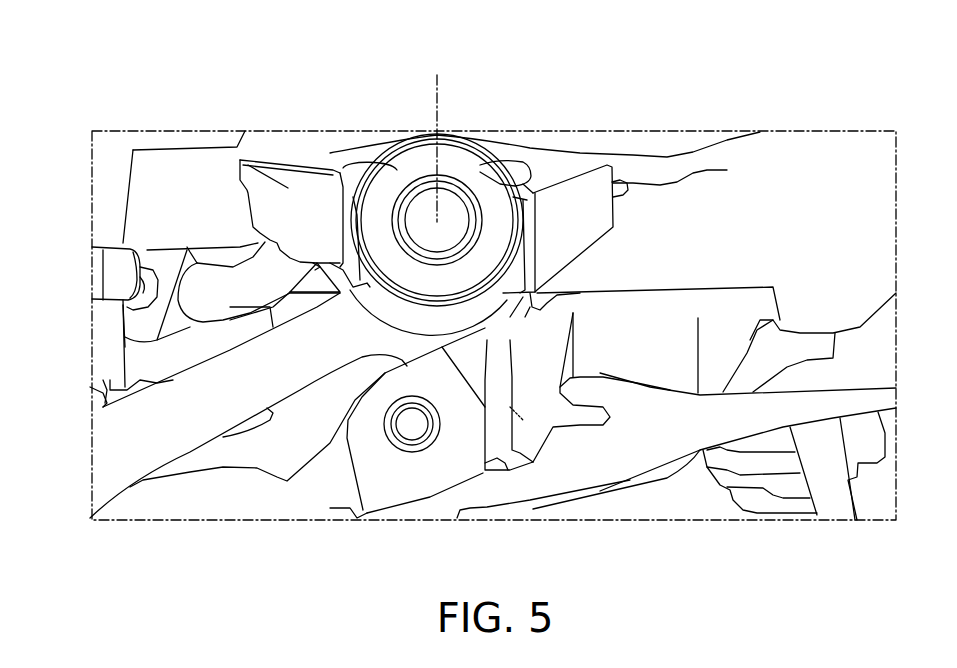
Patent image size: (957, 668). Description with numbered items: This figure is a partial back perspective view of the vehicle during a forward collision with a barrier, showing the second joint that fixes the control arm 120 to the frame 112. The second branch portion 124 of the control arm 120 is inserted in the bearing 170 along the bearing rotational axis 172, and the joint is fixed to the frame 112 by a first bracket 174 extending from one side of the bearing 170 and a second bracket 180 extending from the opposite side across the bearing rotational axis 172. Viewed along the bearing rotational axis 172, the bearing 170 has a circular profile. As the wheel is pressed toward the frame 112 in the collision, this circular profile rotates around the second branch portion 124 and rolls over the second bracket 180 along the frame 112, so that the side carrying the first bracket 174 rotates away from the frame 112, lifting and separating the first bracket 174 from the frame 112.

The frame 112 is at (555, 163).
The control arm 120 is at (121, 460).
The second branch portion 124 is at (213, 403).
The bearing 170 is at (400, 187).
The bearing rotational axis 172 is at (437, 113).
The first bracket 174 is at (597, 200).
The second bracket 180 is at (241, 158).